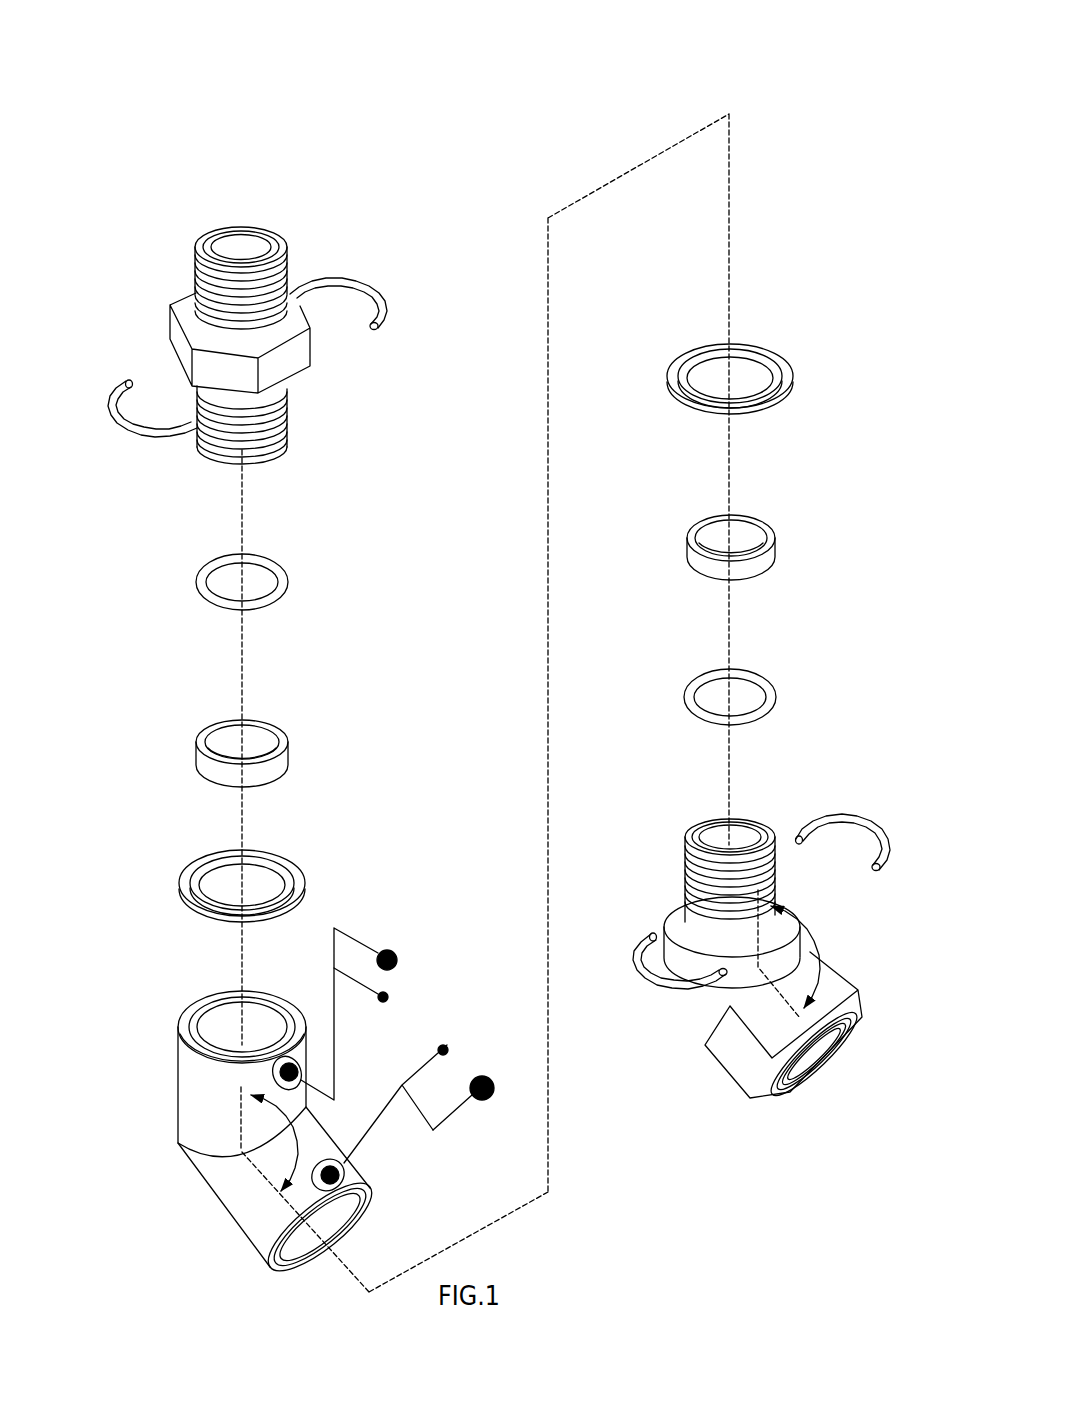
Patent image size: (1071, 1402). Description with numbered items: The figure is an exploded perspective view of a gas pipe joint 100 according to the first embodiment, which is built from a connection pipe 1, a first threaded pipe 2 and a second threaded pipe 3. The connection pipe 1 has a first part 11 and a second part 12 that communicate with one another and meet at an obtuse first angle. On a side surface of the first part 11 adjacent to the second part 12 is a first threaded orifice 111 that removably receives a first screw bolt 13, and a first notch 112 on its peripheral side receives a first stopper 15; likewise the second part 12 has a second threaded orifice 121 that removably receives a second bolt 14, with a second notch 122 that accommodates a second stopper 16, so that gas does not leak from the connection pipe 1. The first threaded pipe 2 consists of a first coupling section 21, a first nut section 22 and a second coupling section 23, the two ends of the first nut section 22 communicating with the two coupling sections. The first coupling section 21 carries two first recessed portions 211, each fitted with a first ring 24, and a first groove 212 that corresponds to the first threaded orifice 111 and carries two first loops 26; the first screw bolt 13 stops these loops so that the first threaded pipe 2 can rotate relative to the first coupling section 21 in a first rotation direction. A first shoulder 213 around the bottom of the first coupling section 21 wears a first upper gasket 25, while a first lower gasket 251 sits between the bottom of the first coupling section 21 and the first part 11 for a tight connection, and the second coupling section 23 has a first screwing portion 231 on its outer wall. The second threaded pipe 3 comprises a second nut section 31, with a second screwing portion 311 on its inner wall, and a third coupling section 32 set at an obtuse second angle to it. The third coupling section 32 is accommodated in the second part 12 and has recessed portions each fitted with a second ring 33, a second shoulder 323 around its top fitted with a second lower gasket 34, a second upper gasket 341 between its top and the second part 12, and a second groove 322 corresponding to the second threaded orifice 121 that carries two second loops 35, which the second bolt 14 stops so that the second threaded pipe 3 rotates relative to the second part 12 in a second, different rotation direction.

The gas pipe joint 100 is at (710, 100).
The connection pipe 1 is at (160, 1150).
The first part 11 is at (195, 1085).
The first threaded orifice 111 is at (298, 1073).
The first notch 112 is at (300, 1082).
The second part 12 is at (243, 1207).
The second threaded orifice 121 is at (344, 1182).
The second notch 122 is at (331, 1165).
The first screw bolt 13 is at (391, 951).
The second bolt 14 is at (481, 1101).
The first stopper 15 is at (389, 997).
The second stopper 16 is at (449, 1047).
The first threaded pipe 2 is at (362, 237).
The first coupling section 21 is at (264, 465).
The first recessed portion 211 is at (260, 417).
The first groove 212 is at (287, 403).
The first shoulder 213 is at (223, 443).
The first nut section 22 is at (163, 332).
The second coupling section 23 is at (215, 242).
The first screwing portion 231 is at (293, 290).
The first ring 24 is at (283, 580).
The first upper gasket 25 is at (283, 742).
The first lower gasket 251 is at (297, 877).
The first loop 26 is at (380, 323).
The second threaded pipe 3 is at (833, 805).
The second nut section 31 is at (759, 1052).
The second screwing portion 311 is at (823, 1063).
The third coupling section 32 is at (675, 887).
The second groove 322 is at (678, 902).
The second shoulder 323 is at (767, 833).
The second ring 33 is at (771, 698).
The second lower gasket 34 is at (773, 538).
The second upper gasket 341 is at (781, 382).
The second loop 35 is at (877, 832).